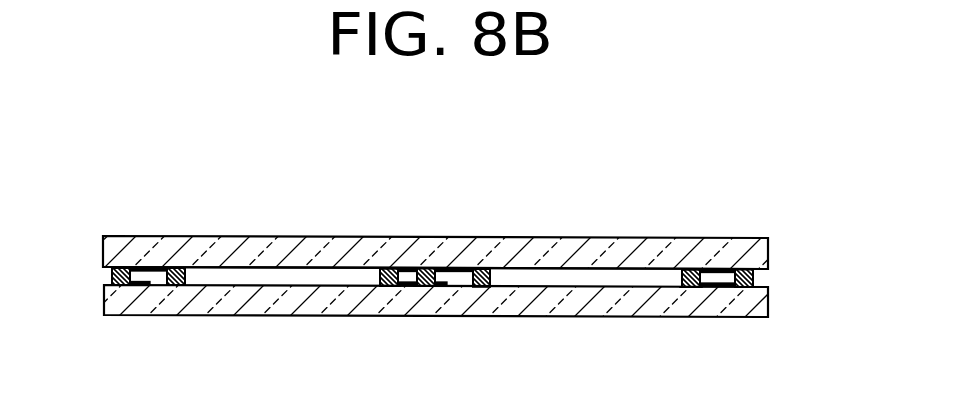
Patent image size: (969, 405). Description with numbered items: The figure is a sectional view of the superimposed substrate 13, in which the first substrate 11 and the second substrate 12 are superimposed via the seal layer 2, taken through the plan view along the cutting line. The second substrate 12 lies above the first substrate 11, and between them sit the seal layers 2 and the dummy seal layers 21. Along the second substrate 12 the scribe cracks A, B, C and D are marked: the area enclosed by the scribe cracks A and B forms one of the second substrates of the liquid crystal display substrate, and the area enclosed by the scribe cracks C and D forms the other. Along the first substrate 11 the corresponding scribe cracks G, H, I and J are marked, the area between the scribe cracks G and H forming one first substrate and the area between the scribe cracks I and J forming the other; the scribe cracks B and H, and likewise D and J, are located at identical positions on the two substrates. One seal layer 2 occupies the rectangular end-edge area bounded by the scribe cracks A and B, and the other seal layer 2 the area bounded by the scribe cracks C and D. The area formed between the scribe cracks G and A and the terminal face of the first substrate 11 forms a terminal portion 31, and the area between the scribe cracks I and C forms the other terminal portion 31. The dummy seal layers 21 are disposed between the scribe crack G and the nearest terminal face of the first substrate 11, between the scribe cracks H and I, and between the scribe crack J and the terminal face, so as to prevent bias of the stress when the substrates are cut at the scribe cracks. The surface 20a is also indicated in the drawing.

The superimposed substrate 13 is at (594, 220).
The second substrate 12 is at (303, 247).
The first substrate 11 is at (618, 306).
The inner surface of upper substrate 20a is at (232, 267).
The terminal portion 31 is at (150, 268).
The dummy seal layer 21 is at (424, 268).
The seal layer 2 is at (186, 276).
The scribe crack A is at (172, 266).
The scribe crack B is at (388, 266).
The scribe crack C is at (478, 267).
The scribe crack D is at (688, 267).
The scribe crack G is at (137, 287).
The scribe crack H is at (391, 293).
The scribe crack I is at (442, 291).
The scribe crack J is at (690, 292).